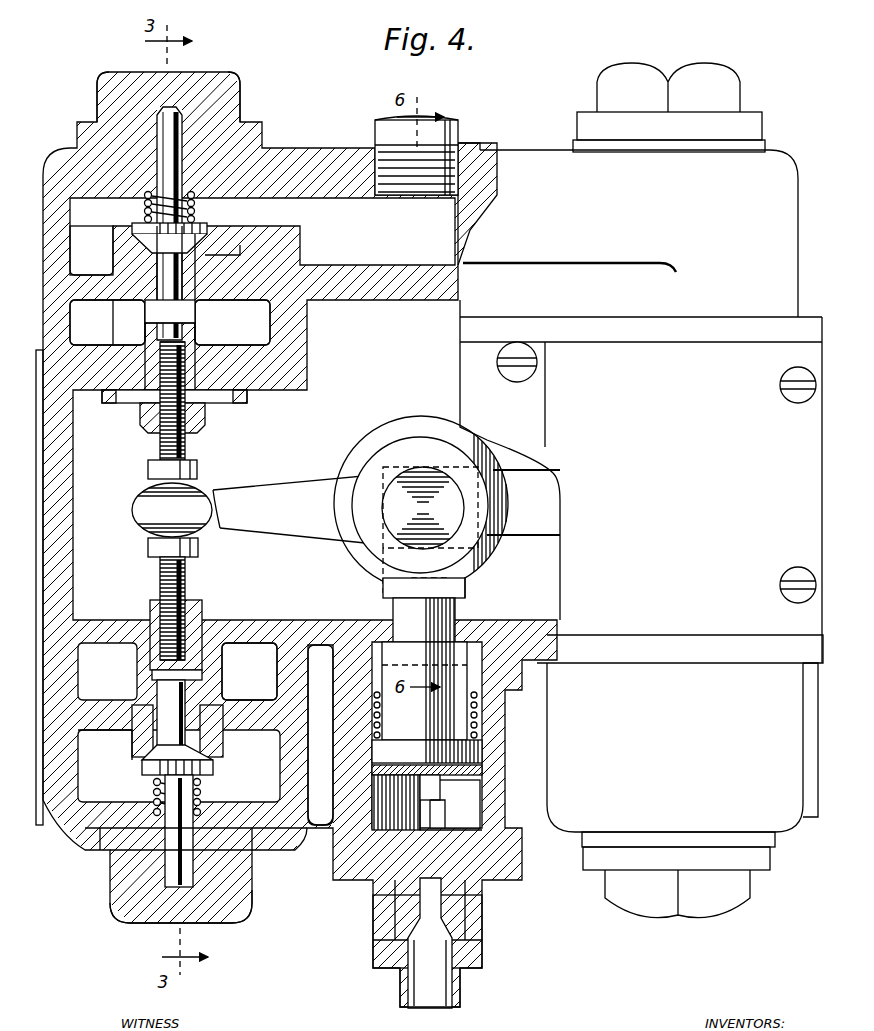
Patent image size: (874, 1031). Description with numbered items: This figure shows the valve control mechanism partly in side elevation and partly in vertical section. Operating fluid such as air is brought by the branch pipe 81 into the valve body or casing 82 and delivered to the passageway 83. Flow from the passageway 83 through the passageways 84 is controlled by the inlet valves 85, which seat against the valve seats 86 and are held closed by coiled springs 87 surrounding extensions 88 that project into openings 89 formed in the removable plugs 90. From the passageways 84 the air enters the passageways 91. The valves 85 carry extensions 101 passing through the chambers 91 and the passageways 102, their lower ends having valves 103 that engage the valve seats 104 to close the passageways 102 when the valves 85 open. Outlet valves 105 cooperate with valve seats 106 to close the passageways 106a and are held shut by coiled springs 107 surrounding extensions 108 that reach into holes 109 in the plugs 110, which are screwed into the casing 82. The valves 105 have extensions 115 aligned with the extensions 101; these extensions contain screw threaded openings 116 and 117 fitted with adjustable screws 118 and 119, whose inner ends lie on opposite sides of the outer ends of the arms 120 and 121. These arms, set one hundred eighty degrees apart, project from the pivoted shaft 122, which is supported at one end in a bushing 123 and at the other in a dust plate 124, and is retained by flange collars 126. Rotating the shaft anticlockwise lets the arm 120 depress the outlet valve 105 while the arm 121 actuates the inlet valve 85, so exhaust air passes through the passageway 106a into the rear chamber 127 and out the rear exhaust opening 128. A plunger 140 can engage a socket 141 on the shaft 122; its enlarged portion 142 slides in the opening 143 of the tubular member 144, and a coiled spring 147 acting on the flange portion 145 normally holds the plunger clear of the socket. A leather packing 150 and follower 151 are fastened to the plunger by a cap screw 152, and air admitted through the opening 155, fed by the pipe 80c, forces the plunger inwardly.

The pipe 80c is at (400, 990).
The branch pipe 81 is at (460, 132).
The valve body or casing 82 is at (640, 242).
The passageway or conduit 83 is at (416, 230).
The passageways 84 is at (205, 275).
The valves 85 is at (210, 228).
The valve seats 86 is at (128, 248).
The coiled springs 87 is at (198, 205).
The extensions 88 is at (180, 130).
The openings 89 is at (121, 78).
The removable plugs 90 is at (215, 85).
The passageways 91 is at (232, 322).
The extensions 101 is at (157, 318).
The passageways 102 is at (215, 403).
The valves 103 is at (140, 430).
The valve seats 104 is at (130, 404).
The outlet valves 105 is at (214, 768).
The valve seats 106 is at (142, 765).
The passageways 106a is at (152, 715).
The coiled springs 107 is at (152, 789).
The extensions 108 is at (170, 852).
The holes 109 is at (252, 878).
The plugs 110 is at (250, 905).
The extensions 115 is at (195, 700).
The screw threaded opening 116 is at (198, 430).
The screw threaded opening 117 is at (205, 608).
The adjustable screw 118 is at (160, 462).
The adjustable screw 119 is at (160, 572).
The arm 120 is at (331, 505).
The arm 121 is at (523, 502).
The pivoted shaft 122 is at (423, 508).
The bushing 123 is at (410, 420).
The dust plate 124 is at (530, 410).
The flange collars 126 is at (420, 505).
The rear chamber or passageway 127 is at (249, 671).
The rear exhaust opening 128 is at (310, 668).
The plunger 140 is at (400, 612).
The socket 141 is at (470, 586).
The enlarged portion 142 is at (424, 669).
The opening 143 is at (362, 628).
The tubular member 144 is at (498, 726).
The flange portion 145 is at (427, 751).
The coiled spring 147 is at (370, 712).
The packing 150 is at (372, 770).
The follower 151 is at (385, 785).
The cap screw 152 is at (440, 795).
The opening 155 is at (441, 906).